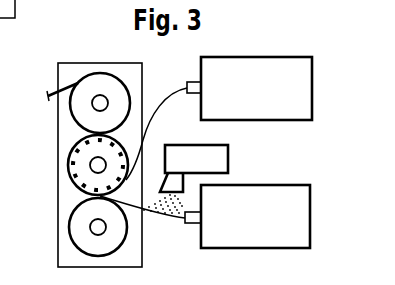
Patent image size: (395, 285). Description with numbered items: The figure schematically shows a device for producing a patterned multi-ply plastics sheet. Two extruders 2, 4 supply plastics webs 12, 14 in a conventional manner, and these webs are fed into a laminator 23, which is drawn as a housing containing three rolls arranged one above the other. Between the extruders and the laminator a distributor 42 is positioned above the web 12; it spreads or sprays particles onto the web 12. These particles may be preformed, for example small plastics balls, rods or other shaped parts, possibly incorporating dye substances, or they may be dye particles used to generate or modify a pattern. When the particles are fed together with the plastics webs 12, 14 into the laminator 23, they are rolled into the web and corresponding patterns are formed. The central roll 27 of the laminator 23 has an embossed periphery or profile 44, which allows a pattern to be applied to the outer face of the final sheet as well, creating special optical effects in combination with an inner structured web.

The extruder 2 is at (260, 219).
The extruder 4 is at (257, 90).
The web 12 is at (155, 215).
The web 14 is at (168, 88).
The laminator 23 is at (63, 248).
The central roll 27 is at (75, 167).
The distributor 42 is at (222, 157).
The embossed periphery or profile 44 is at (83, 192).